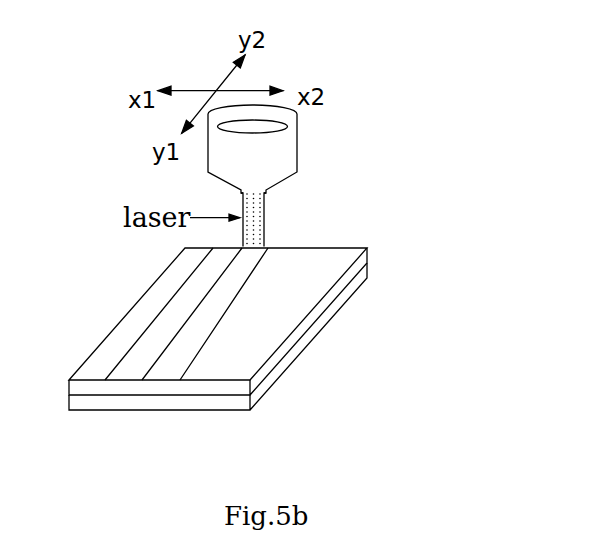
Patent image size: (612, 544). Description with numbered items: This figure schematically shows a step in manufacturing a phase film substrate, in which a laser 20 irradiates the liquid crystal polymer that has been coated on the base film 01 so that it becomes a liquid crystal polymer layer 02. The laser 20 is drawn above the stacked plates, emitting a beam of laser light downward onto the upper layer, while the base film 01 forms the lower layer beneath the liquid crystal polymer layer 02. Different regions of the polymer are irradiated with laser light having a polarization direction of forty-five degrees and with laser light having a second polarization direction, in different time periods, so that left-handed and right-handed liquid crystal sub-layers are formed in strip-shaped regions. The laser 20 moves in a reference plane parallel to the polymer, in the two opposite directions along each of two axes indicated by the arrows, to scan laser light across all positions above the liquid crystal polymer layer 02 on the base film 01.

The laser 20 is at (298, 152).
The liquid crystal polymer layer 02 is at (335, 255).
The base film 01 is at (263, 393).